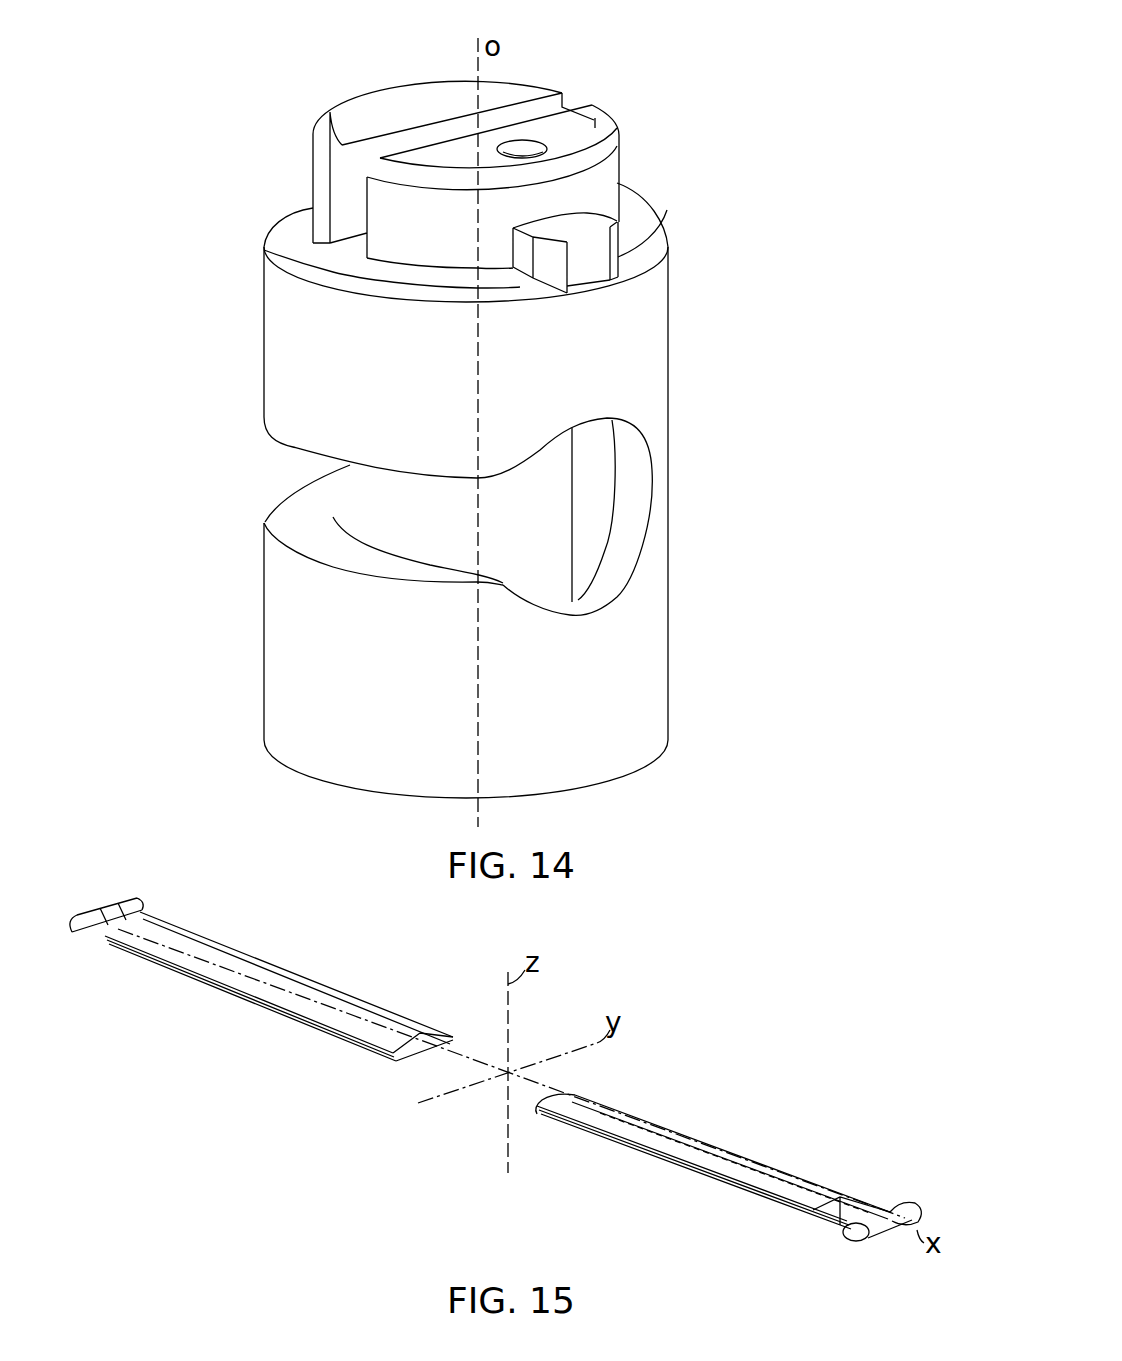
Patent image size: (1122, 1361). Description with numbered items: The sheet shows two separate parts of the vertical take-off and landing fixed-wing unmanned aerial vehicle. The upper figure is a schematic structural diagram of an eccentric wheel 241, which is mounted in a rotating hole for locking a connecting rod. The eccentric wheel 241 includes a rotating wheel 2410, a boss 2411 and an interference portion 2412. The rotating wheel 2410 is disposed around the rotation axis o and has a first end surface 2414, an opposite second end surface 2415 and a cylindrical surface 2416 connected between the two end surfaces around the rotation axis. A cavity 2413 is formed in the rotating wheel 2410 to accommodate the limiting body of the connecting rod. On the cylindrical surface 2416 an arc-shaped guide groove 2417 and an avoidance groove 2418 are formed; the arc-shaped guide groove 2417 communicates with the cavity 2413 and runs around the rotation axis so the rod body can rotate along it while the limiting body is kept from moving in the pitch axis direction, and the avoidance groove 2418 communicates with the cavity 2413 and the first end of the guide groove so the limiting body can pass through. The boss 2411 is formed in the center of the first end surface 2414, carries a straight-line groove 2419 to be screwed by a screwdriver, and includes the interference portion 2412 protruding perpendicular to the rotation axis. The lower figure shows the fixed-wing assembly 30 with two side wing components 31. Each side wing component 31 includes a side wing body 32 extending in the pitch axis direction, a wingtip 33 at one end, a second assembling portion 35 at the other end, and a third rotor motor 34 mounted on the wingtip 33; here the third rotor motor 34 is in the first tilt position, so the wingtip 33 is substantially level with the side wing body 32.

In FIG. 14, the eccentric wheel 241 is at (640, 29).
In FIG. 14, the rotating wheel 2410 is at (791, 192).
In FIG. 14, the boss 2411 is at (607, 140).
In FIG. 14, the interference portion 2412 is at (588, 242).
In FIG. 14, the cavity 2413 is at (562, 490).
In FIG. 14, the first end surface 2414 is at (640, 215).
In FIG. 14, the second end surface 2415 is at (620, 777).
In FIG. 14, the cylindrical surface 2416 is at (655, 357).
In FIG. 14, the arc-shaped guide groove 2417 is at (313, 495).
In FIG. 14, the avoidance groove 2418 is at (622, 550).
In FIG. 14, the groove 2419 is at (353, 175).
In FIG. 15, the fixed-wing assembly 30 is at (873, 1063).
In FIG. 15, the side wing component 31 is at (323, 990).
In FIG. 15, the side wing body 32 is at (685, 1130).
In FIG. 15, the wingtip 33 is at (868, 1205).
In FIG. 15, the third rotor motor 34 is at (912, 1212).
In FIG. 15, the second assembling portion 35 is at (580, 1093).